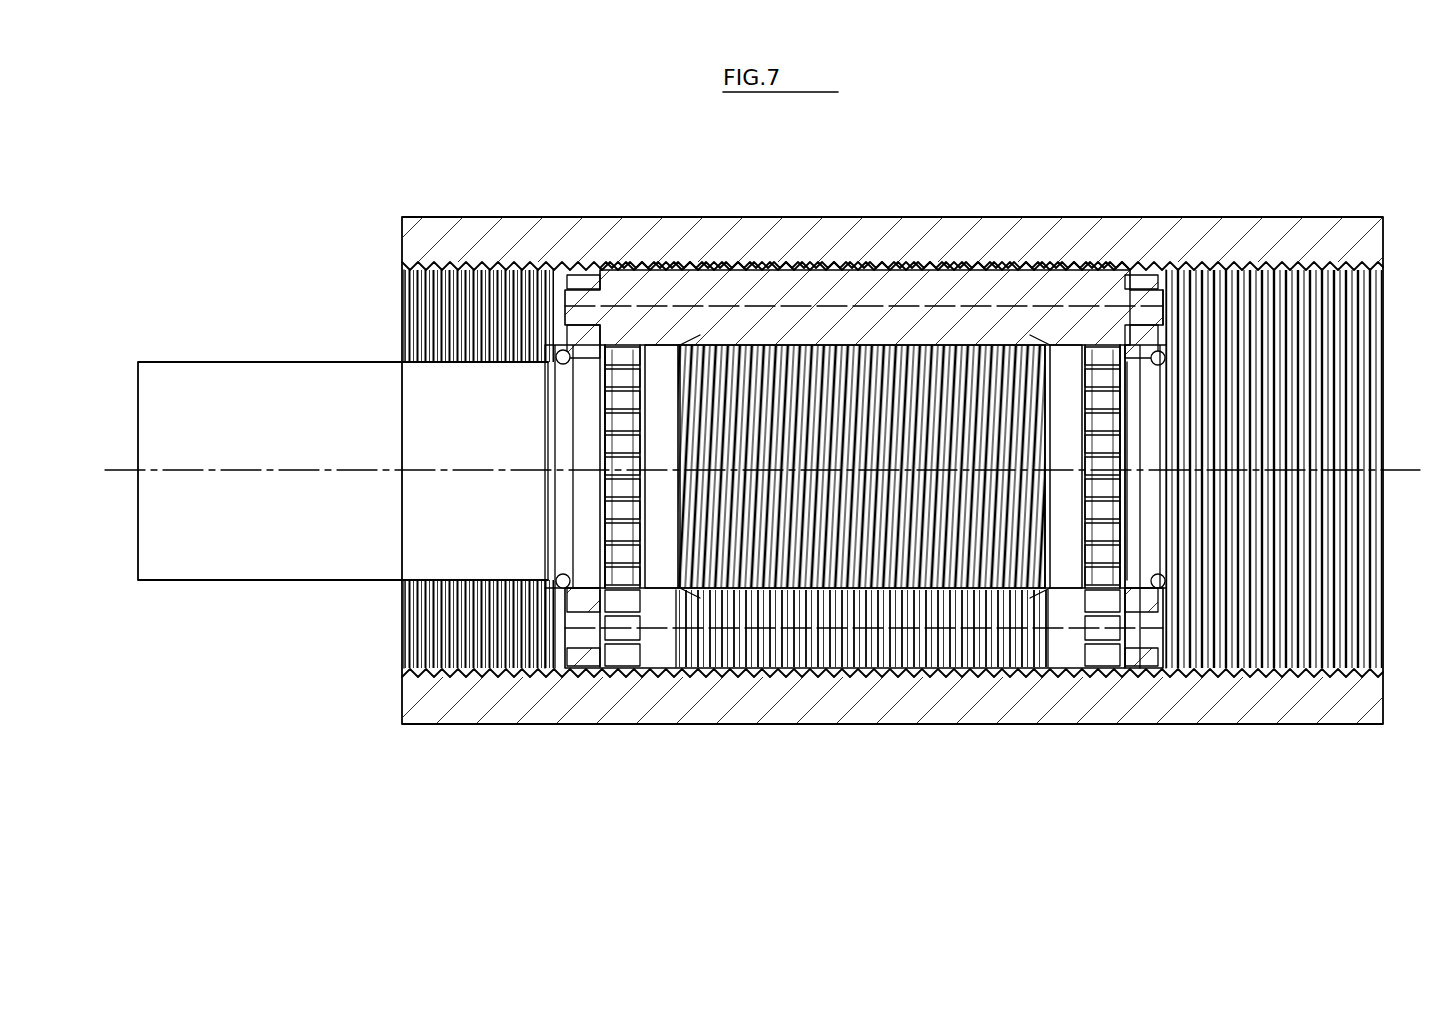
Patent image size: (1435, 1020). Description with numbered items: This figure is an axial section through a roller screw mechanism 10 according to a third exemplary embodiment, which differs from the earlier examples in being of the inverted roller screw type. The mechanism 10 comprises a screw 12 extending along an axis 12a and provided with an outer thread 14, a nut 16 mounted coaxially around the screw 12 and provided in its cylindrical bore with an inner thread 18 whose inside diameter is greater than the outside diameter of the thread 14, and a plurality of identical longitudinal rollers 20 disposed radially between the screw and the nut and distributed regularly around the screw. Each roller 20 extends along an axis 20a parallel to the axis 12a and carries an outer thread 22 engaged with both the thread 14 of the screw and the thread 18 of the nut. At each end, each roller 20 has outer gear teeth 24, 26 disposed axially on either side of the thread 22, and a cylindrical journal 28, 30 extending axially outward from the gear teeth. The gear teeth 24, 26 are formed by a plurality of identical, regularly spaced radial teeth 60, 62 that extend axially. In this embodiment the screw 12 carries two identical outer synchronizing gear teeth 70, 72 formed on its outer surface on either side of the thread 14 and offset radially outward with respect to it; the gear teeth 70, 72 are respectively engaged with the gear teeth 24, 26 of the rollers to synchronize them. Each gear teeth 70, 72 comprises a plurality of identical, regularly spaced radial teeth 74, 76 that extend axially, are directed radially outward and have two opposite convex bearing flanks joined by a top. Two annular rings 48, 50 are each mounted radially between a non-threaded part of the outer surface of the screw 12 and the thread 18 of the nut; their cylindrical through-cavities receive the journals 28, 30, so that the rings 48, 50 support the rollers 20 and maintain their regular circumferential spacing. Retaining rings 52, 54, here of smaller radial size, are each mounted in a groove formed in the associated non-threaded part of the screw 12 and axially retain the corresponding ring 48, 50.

The roller screw mechanism 10 is at (1156, 165).
The screw 12 is at (295, 358).
The axis of the screw 12a is at (1410, 466).
The outer thread 14 is at (818, 592).
The nut 16 is at (634, 215).
The inner thread 18 is at (433, 272).
The longitudinal roller 20 is at (908, 328).
The roller axis 20a is at (1165, 338).
The outer thread of roller 22 is at (968, 264).
The outer gear teeth 24 is at (680, 600).
The outer gear teeth 26 is at (1057, 600).
The cylindrical journal 28 is at (587, 680).
The cylindrical journal 30 is at (1145, 640).
The annular ring 48 is at (590, 288).
The annular ring 50 is at (1140, 288).
The retaining ring 52 is at (560, 350).
The retaining ring 54 is at (1165, 356).
The radial teeth 60 is at (615, 645).
The radial teeth 62 is at (1104, 645).
The outer synchronizing gear teeth 70 is at (590, 451).
The outer synchronizing gear teeth 72 is at (1258, 600).
The radial teeth 74 is at (606, 492).
The radial teeth 76 is at (1137, 493).